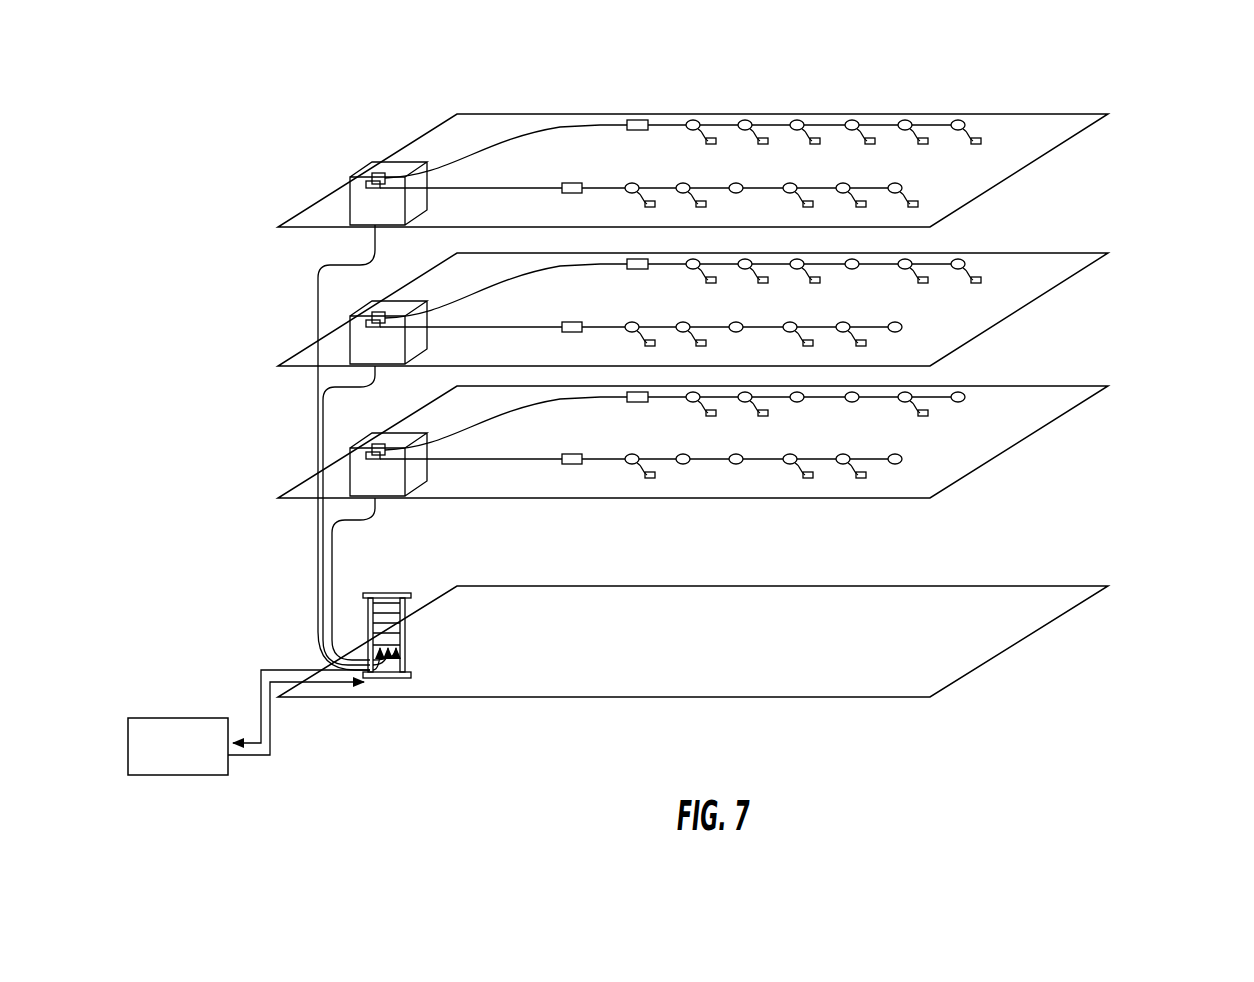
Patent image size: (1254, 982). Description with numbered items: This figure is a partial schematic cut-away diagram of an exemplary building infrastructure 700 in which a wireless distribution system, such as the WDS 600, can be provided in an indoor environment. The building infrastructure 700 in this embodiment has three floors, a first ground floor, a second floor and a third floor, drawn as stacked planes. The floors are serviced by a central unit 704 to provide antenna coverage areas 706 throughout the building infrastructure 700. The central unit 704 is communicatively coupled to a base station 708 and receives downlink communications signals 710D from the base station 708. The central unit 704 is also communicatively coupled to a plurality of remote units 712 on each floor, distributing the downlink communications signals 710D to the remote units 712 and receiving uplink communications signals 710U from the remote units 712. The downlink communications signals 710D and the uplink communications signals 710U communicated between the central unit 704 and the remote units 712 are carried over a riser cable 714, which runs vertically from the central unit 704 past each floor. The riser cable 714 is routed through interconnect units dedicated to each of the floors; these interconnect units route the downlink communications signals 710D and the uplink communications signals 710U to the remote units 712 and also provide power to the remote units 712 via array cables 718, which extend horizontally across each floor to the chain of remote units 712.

The building infrastructure 700 is at (830, 56).
The WDS 600 is at (1052, 506).
The antenna coverage areas 706 is at (1016, 273).
The downlink communications signals 710D is at (525, 122).
The uplink communications signals 710U is at (258, 652).
The riser cable 714 is at (315, 586).
The central unit 704 is at (417, 640).
The base station 708 is at (178, 746).
The array cables 718 is at (632, 148).
The remote units 712 is at (928, 138).